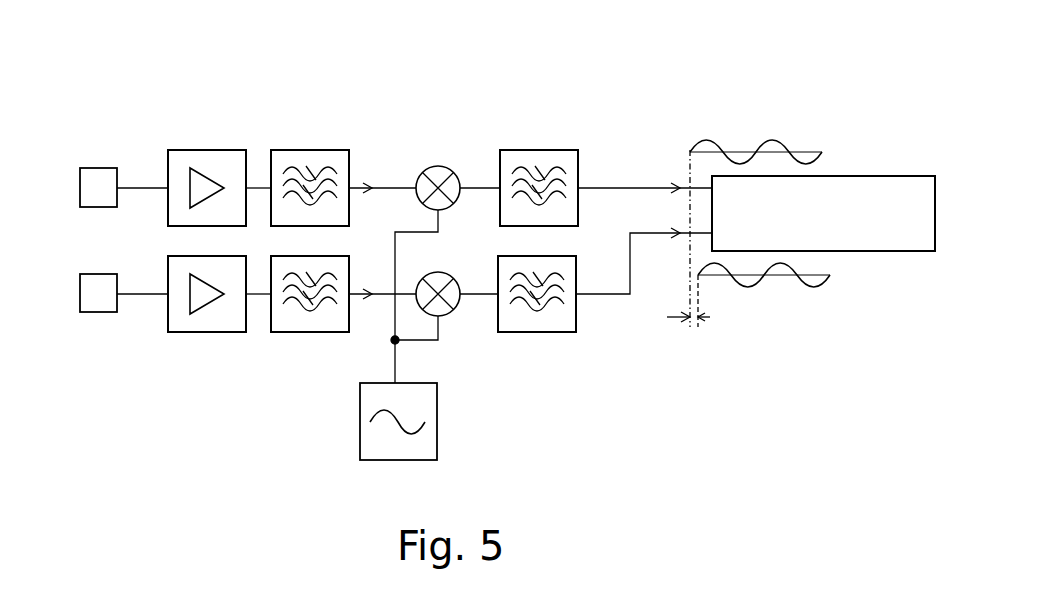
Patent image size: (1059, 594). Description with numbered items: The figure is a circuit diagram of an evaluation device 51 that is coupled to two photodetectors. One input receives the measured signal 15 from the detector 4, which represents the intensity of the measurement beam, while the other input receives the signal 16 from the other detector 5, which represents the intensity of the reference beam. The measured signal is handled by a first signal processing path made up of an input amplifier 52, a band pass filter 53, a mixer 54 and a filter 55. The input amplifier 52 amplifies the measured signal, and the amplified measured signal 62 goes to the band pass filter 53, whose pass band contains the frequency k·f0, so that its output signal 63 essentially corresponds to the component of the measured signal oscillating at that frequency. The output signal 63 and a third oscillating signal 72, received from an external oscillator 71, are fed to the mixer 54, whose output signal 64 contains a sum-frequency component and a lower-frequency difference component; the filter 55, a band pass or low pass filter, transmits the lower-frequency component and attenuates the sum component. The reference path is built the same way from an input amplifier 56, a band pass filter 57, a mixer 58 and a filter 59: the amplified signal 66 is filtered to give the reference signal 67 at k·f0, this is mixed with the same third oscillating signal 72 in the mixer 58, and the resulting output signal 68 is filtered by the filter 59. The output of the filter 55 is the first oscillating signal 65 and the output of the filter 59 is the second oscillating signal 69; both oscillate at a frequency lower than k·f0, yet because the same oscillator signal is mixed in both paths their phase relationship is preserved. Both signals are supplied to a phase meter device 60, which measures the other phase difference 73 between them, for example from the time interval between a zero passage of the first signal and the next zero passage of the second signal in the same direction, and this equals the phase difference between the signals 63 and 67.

The detector 4 is at (103, 168).
The other detector 5 is at (93, 312).
The measured signal 15 is at (146, 188).
The signal 16 is at (140, 294).
The evaluation device 51 is at (612, 72).
The input amplifier 52 is at (205, 150).
The band pass filter 53 is at (310, 150).
The mixer 54 is at (438, 166).
The filter 55 is at (540, 150).
The input amplifier 56 is at (205, 332).
The band pass filter 57 is at (306, 332).
The mixer 58 is at (445, 316).
The filter 59 is at (568, 332).
The phase meter device 60 is at (917, 251).
The amplified measured signal 62 is at (262, 188).
The output signal of the band pass filter 63 is at (392, 188).
The output signal of the mixer 64 is at (480, 188).
The first oscillating signal 65 is at (615, 188).
The amplified signal 66 is at (258, 294).
The output signal of the band pass filter 67 is at (378, 294).
The output signal of the mixer 68 is at (488, 294).
The second oscillating signal 69 is at (619, 294).
The external oscillator 71 is at (437, 453).
The third oscillating signal 72 is at (395, 366).
The other phase difference 73 is at (710, 317).